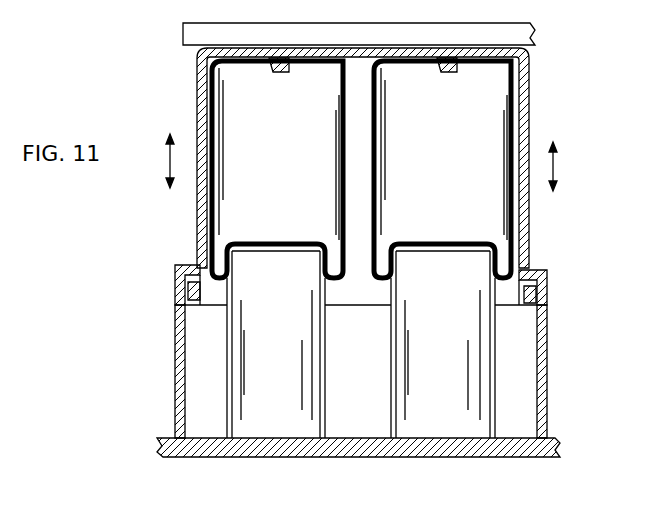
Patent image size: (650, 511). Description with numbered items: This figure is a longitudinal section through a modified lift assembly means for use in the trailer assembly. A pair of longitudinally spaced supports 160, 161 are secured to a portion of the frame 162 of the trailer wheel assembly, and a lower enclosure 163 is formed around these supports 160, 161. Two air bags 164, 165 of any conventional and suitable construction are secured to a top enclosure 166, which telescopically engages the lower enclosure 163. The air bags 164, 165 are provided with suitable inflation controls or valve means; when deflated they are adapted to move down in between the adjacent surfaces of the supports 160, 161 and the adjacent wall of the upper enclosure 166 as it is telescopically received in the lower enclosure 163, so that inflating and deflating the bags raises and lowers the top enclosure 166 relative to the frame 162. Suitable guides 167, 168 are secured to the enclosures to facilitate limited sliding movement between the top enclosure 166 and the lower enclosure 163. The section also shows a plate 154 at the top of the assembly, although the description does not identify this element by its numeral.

The top plate 154 is at (535, 38).
The support 160 is at (322, 347).
The support 161 is at (398, 381).
The frame 162 is at (461, 457).
The lower enclosure 163 is at (176, 386).
The air bag 164 is at (198, 95).
The air bag 165 is at (377, 128).
The top enclosure 166 is at (529, 118).
The guide 167 is at (537, 305).
The guide 168 is at (531, 268).